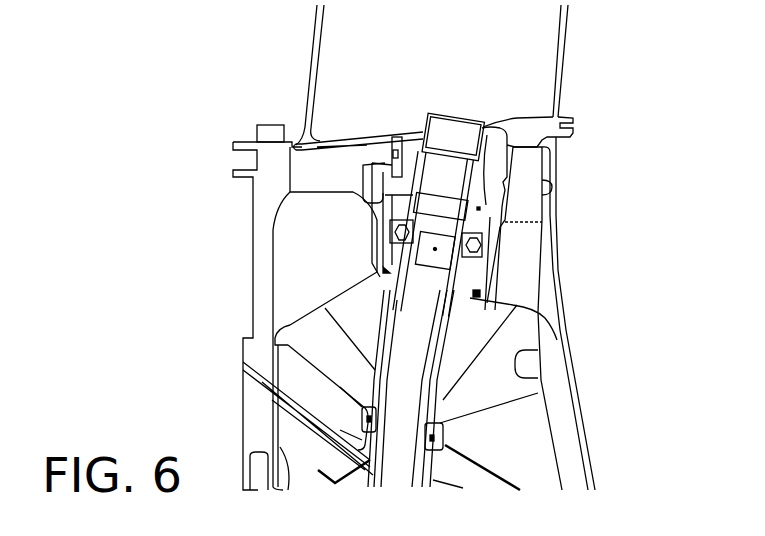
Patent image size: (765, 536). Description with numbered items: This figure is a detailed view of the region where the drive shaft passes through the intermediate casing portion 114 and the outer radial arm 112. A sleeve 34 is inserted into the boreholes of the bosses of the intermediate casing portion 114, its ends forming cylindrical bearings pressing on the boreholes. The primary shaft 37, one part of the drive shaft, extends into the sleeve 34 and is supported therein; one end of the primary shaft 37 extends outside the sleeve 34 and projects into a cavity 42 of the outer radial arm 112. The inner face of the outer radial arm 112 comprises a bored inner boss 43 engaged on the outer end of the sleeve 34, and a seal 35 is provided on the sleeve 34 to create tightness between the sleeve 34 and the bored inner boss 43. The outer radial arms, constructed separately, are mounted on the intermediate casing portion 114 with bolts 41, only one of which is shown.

The sleeve 34 is at (492, 165).
The seal 35 is at (375, 158).
The primary shaft 37 is at (385, 428).
The bolts 41 is at (253, 121).
The cavity 42 is at (337, 66).
The bored inner boss 43 is at (396, 140).
The outer radial arm 112 is at (567, 51).
The intermediate casing portion 114 is at (575, 344).